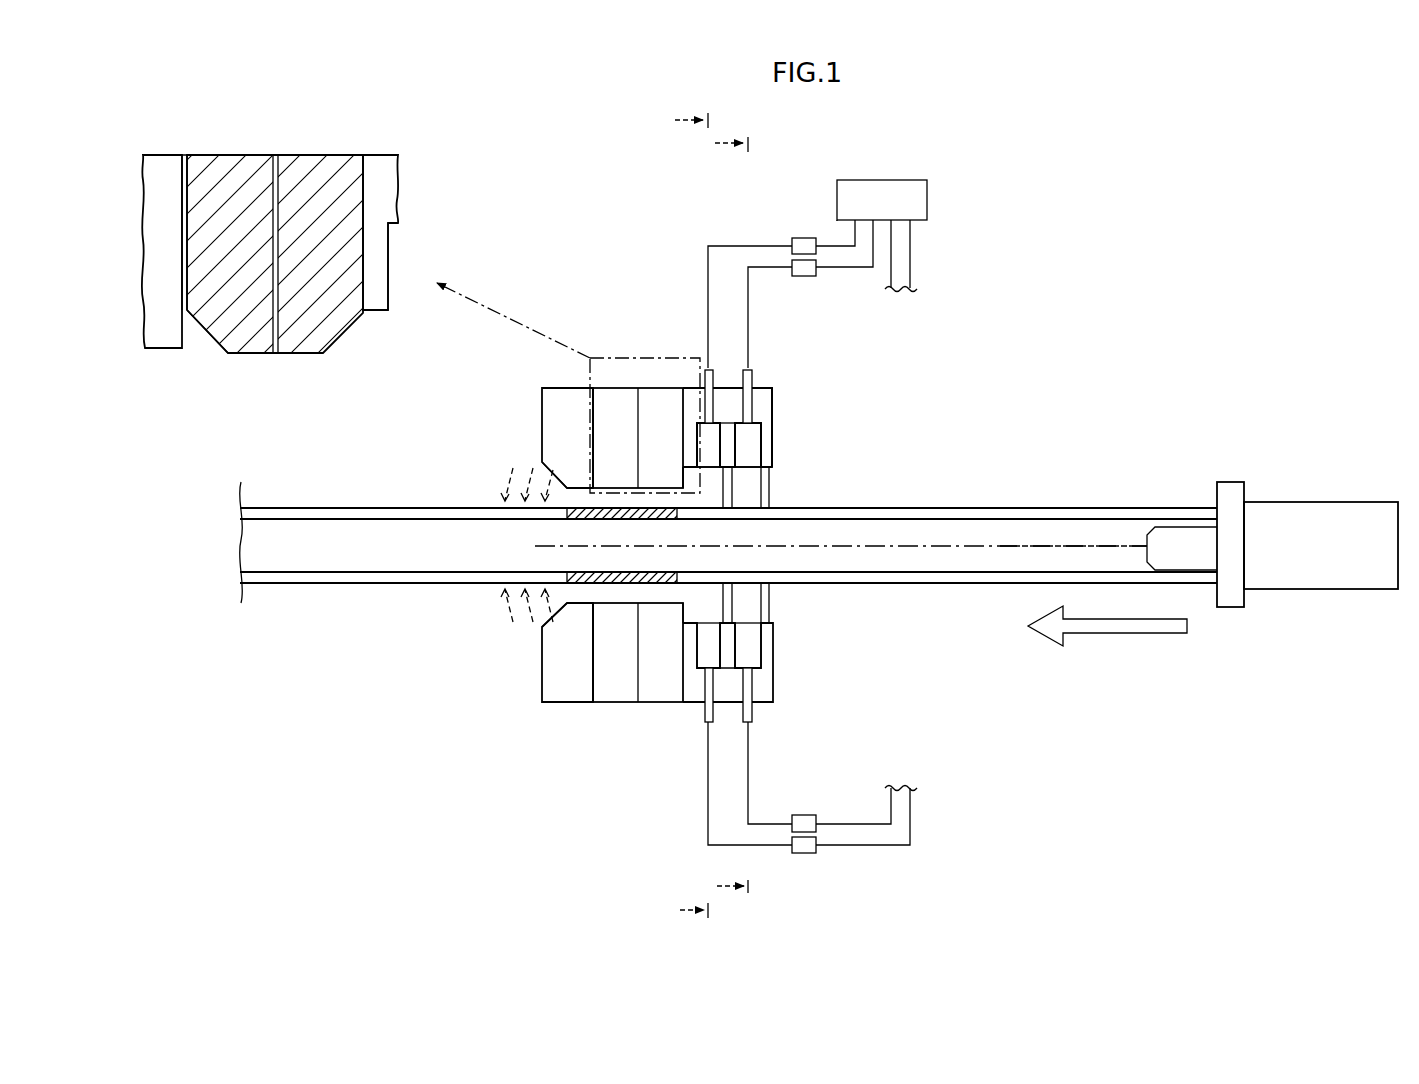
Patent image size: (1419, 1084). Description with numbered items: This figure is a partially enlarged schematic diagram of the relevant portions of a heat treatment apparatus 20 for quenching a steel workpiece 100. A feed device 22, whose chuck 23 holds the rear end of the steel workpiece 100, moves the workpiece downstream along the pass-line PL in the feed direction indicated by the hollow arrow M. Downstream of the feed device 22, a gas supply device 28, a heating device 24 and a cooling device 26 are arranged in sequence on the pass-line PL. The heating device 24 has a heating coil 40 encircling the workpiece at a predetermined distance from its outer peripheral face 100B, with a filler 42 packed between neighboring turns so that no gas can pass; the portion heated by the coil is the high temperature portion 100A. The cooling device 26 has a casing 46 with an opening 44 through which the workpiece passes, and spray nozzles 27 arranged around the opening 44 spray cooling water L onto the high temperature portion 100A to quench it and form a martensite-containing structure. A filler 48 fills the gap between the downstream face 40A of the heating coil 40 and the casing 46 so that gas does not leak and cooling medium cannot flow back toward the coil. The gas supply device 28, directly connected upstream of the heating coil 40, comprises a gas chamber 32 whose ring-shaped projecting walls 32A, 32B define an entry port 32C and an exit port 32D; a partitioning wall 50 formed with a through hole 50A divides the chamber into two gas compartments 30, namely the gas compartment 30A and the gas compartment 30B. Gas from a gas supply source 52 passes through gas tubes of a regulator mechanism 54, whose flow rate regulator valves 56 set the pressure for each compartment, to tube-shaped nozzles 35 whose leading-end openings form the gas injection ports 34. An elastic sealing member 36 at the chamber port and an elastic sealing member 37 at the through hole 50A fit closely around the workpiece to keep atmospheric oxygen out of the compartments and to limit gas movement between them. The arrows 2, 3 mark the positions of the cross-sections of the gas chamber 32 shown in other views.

The section line II 2 is at (736, 514).
The section line III 3 is at (696, 516).
The heat treatment apparatus 20 is at (975, 298).
The feed device 22 is at (1318, 502).
The chuck 23 is at (1148, 533).
The heating device 24 is at (640, 355).
The cooling device 26 is at (140, 143).
The spray nozzle 27 is at (545, 463).
The gas supply device 28 is at (780, 377).
The gas compartment 30 is at (729, 445).
The gas compartment 30A is at (750, 447).
The gas compartment 30B is at (712, 482).
The gas chamber 32 is at (385, 150).
The projecting wall 32A is at (773, 430).
The projecting wall 32B is at (685, 630).
The entry port 32C is at (773, 478).
The exit port 32D is at (375, 312).
The gas injection port 34 is at (695, 430).
The nozzle 35 is at (712, 380).
The elastic sealing member 36 is at (774, 610).
The elastic sealing member 37 is at (740, 596).
The heating coil 40 is at (310, 150).
The face of heating coil 40A is at (365, 247).
The filler 42 is at (275, 355).
The opening 44 is at (545, 625).
The casing 46 is at (165, 155).
The filler 48 is at (187, 312).
The partitioning wall 50 is at (740, 637).
The through hole 50A is at (718, 470).
The gas supply source 52 is at (927, 200).
The regulator mechanism 54 is at (812, 532).
The flow rate regulator valve 56 is at (800, 238).
The steel workpiece 100 is at (985, 587).
The high temperature portion 100A is at (617, 585).
The outer peripheral face 100B is at (940, 587).
The cooling water L is at (505, 484).
The hollow arrow M is at (1120, 634).
The pass-line PL is at (1083, 545).